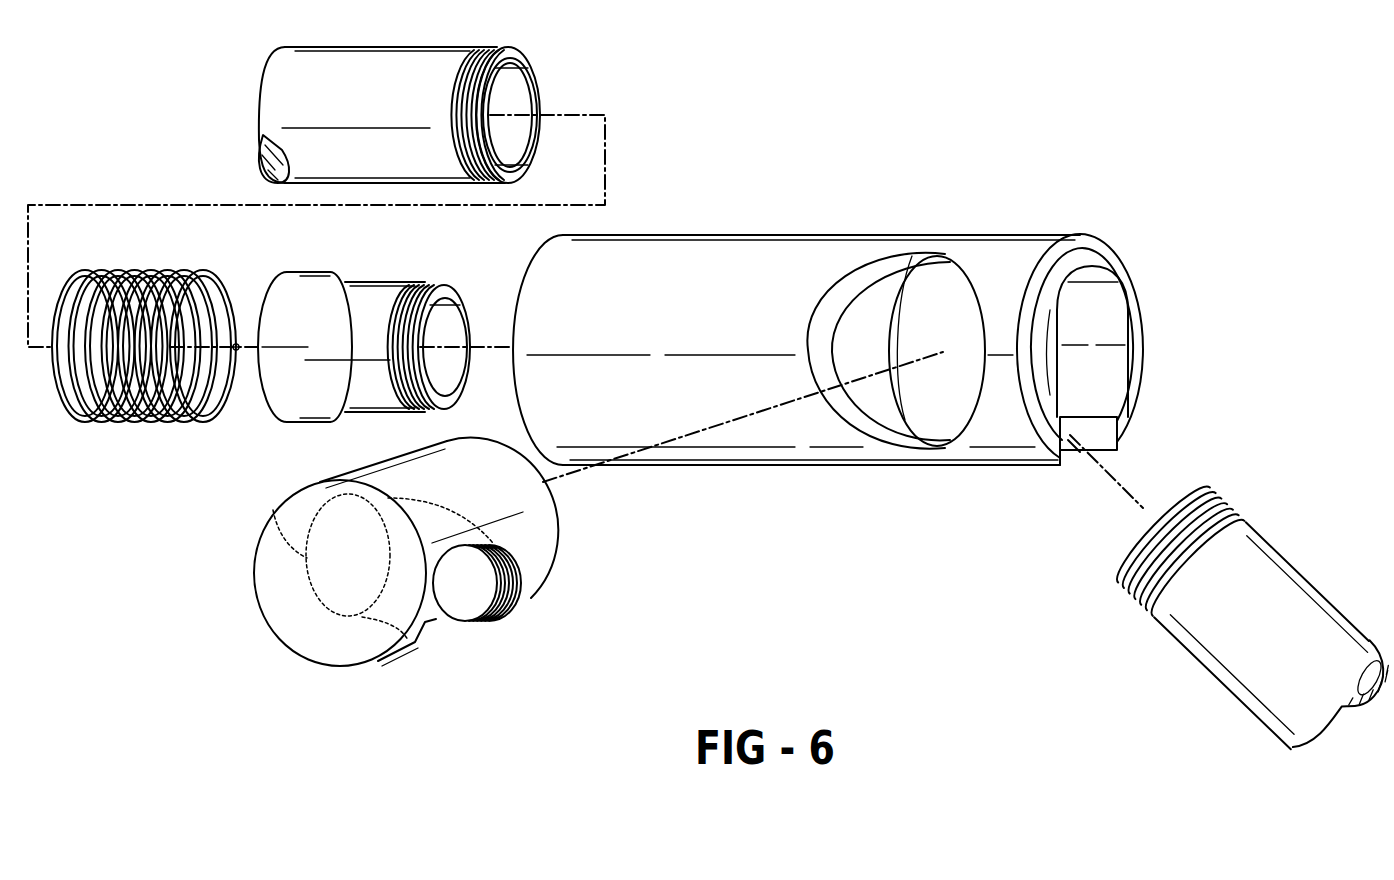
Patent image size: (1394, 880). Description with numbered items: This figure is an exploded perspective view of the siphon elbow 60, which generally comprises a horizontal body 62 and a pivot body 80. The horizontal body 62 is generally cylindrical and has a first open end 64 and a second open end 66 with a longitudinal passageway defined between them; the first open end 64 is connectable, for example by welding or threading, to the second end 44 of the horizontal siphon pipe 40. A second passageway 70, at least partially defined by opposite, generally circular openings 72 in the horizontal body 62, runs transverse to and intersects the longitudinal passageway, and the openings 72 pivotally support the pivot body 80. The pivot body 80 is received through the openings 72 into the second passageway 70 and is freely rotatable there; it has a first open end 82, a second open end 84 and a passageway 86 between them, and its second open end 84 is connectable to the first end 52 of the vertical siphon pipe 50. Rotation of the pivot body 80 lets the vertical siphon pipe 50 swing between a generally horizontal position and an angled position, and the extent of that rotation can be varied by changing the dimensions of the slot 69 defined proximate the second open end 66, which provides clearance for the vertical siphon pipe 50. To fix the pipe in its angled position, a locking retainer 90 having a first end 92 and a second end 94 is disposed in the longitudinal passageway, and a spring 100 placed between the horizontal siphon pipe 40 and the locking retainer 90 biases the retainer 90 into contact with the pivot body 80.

The horizontal siphon pipe 40 is at (410, 40).
The second end of the horizontal pipe 44 is at (535, 75).
The vertical siphon pipe 50 is at (1298, 562).
The first end of the vertical siphon pipe 52 is at (1182, 497).
The siphon elbow 60 is at (785, 175).
The horizontal body 62 is at (725, 233).
The first open end 64 is at (522, 292).
The second open end 66 is at (1144, 277).
The slot 69 is at (1074, 464).
The second passageway 70 is at (927, 420).
The openings 72 is at (963, 285).
The pivot body 80 is at (370, 620).
The first open end of the pivot body 82 is at (273, 510).
The second open end of the pivot body 84 is at (455, 622).
The passageway of the pivot body 86 is at (335, 600).
The locking retainer 90 is at (353, 290).
The first end of the locking retainer 92 is at (265, 290).
The second end of the locking retainer 94 is at (430, 285).
The spring 100 is at (145, 425).